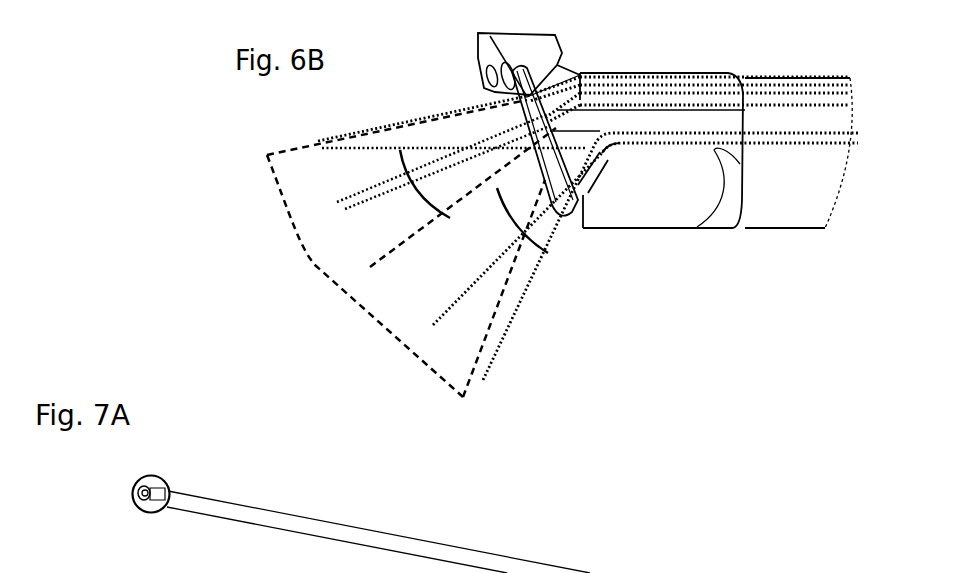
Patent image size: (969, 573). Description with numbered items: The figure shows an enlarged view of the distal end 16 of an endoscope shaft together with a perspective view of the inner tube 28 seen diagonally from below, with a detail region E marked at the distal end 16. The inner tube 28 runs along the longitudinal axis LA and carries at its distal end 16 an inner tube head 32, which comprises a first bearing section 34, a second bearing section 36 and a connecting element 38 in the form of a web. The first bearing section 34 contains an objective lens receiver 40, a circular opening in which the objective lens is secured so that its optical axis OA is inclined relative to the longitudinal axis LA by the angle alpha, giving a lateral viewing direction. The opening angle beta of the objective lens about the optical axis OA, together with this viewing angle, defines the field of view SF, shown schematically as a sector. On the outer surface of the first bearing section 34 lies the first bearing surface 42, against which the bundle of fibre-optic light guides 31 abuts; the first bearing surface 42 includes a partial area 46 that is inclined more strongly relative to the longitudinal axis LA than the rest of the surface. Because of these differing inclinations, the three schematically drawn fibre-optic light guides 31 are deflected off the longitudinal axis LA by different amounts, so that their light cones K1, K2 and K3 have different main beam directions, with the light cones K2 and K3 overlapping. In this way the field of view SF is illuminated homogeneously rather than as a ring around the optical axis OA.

In FIG. 6B, the second bearing section 36 is at (485, 53).
In FIG. 6B, the connecting element 38 is at (482, 77).
In FIG. 6B, the first bearing surface 42 is at (527, 97).
In FIG. 6B, the inner tube head 32 is at (657, 72).
In FIG. 6B, the inner tube 28 is at (757, 80).
In FIG. 7A, the inner tube 28 is at (468, 553).
In FIG. 6B, the fibre-optic light guides 31 is at (822, 137).
In FIG. 6B, the objective lens receiver 40 is at (557, 223).
In FIG. 6B, the first bearing section 34 is at (578, 227).
In FIG. 6B, the partial area 46 is at (618, 150).
In FIG. 7A, the distal end 16 is at (135, 497).
In FIG. 7A, the detail region E is at (150, 477).
In FIG. 6B, the light cone K1 is at (538, 265).
In FIG. 6B, the light cone K2 is at (495, 143).
In FIG. 6B, the light cone K3 is at (343, 135).
In FIG. 6B, the longitudinal axis LA is at (345, 151).
In FIG. 6B, the field of view SF is at (311, 263).
In FIG. 6B, the optical axis OA is at (430, 230).